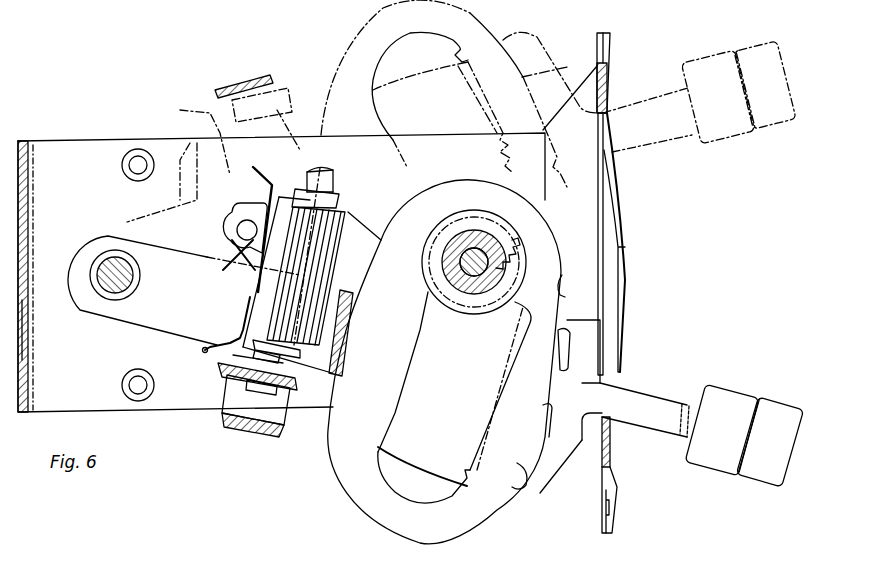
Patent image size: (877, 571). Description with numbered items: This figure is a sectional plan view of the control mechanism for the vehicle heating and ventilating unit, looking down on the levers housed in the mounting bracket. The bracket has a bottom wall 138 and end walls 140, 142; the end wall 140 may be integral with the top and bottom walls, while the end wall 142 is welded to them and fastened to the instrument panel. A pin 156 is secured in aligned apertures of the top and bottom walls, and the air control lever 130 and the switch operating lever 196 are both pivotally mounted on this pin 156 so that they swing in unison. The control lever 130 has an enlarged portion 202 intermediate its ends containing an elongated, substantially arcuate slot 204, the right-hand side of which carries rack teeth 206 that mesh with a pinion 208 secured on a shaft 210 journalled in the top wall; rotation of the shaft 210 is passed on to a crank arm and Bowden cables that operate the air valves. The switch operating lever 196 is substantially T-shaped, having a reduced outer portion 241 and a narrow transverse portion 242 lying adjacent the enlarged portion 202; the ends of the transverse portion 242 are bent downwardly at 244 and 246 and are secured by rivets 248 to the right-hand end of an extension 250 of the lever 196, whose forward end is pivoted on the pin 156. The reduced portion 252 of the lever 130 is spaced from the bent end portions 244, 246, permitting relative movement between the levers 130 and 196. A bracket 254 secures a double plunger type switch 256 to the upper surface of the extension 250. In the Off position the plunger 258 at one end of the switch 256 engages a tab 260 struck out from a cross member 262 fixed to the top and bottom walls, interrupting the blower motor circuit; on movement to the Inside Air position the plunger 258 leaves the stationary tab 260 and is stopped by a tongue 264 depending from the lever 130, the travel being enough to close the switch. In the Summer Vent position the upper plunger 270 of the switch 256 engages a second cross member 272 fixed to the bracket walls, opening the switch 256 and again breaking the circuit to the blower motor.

The control lever 130 is at (758, 470).
The bottom wall 138 is at (68, 142).
The end wall 140 is at (28, 229).
The end wall 142 is at (603, 80).
The pin 156 is at (115, 257).
The switch operating lever 196 is at (738, 395).
The enlarged portion 202 is at (348, 55).
The slot 204 is at (380, 477).
The rack teeth 206 is at (517, 332).
The pinion 208 is at (447, 307).
The shaft 210 is at (465, 260).
The reduced outer portion 241 is at (645, 420).
The transverse portion 242 is at (612, 335).
The bent end 244 is at (626, 292).
The bent end 246 is at (540, 492).
The rivets 248 is at (566, 280).
The extension 250 is at (135, 315).
The reduced portion 252 is at (547, 380).
The bracket 254 is at (234, 257).
The double plunger type switch 256 is at (352, 208).
The plunger 258 is at (310, 372).
The tab 260 is at (208, 353).
The cross member 262 is at (244, 432).
The tongue 264 is at (228, 373).
The upper plunger 270 is at (322, 172).
The cross member 272 is at (215, 88).